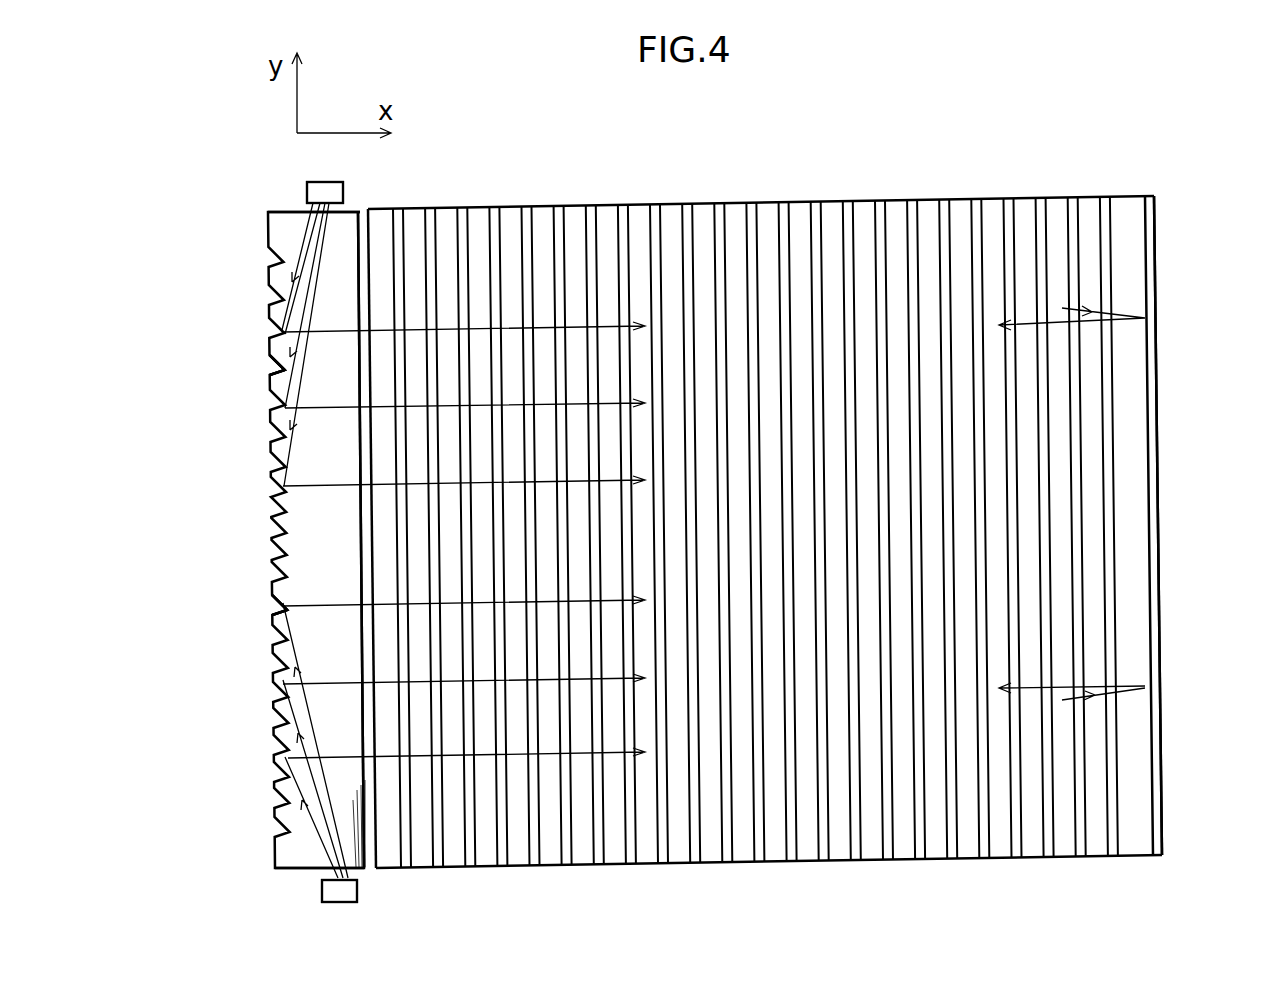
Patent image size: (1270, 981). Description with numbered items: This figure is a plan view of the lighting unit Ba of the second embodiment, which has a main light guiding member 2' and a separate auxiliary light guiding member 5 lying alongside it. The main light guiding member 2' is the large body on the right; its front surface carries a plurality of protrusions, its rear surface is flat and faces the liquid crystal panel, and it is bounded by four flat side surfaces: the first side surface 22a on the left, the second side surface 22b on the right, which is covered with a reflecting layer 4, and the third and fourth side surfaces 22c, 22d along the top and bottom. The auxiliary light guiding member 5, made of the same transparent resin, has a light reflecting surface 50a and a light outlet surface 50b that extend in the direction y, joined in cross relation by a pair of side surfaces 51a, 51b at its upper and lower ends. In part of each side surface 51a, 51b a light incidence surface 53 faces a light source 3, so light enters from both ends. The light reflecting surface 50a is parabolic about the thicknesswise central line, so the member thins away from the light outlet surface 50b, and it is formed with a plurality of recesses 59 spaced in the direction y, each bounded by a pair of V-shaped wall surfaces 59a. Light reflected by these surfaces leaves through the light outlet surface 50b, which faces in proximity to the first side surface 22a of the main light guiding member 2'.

The lighting unit Ba is at (204, 145).
The auxiliary light guiding member 5 is at (257, 216).
The side surface 51a is at (280, 210).
The side surface 51b is at (283, 870).
The light reflecting surface 50a is at (280, 512).
The light outlet surface 50b is at (368, 514).
The recess 59 is at (270, 372).
The V-shaped wall surface 59a is at (265, 368).
The light source 3 is at (332, 193).
The light incidence surface 53 is at (314, 182).
The main light guiding member 2' is at (809, 519).
The first side surface 22a is at (372, 556).
The second side surface 22b is at (1160, 449).
The third side surface 22c is at (768, 201).
The fourth side surface 22d is at (780, 862).
The reflecting layer 4 is at (1158, 366).